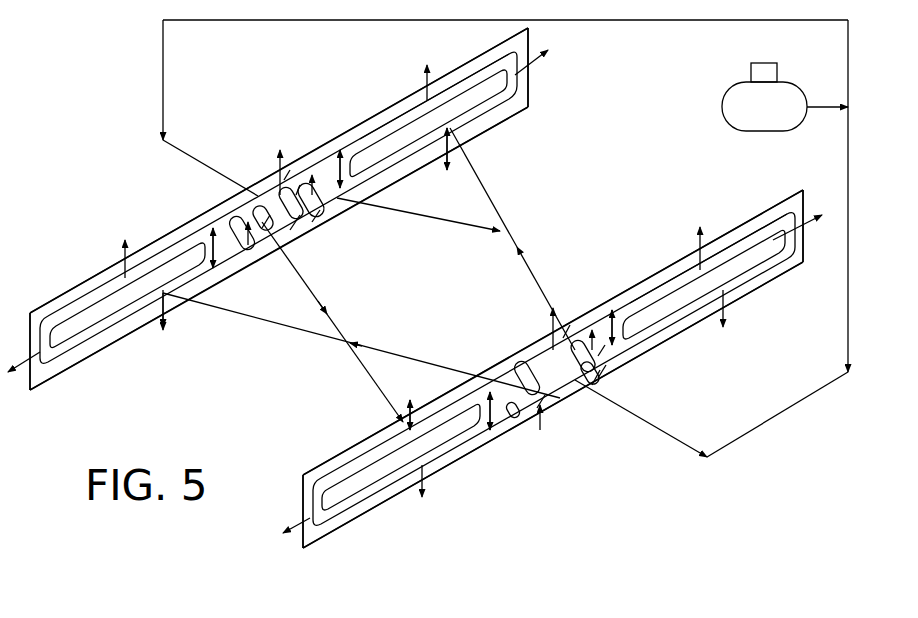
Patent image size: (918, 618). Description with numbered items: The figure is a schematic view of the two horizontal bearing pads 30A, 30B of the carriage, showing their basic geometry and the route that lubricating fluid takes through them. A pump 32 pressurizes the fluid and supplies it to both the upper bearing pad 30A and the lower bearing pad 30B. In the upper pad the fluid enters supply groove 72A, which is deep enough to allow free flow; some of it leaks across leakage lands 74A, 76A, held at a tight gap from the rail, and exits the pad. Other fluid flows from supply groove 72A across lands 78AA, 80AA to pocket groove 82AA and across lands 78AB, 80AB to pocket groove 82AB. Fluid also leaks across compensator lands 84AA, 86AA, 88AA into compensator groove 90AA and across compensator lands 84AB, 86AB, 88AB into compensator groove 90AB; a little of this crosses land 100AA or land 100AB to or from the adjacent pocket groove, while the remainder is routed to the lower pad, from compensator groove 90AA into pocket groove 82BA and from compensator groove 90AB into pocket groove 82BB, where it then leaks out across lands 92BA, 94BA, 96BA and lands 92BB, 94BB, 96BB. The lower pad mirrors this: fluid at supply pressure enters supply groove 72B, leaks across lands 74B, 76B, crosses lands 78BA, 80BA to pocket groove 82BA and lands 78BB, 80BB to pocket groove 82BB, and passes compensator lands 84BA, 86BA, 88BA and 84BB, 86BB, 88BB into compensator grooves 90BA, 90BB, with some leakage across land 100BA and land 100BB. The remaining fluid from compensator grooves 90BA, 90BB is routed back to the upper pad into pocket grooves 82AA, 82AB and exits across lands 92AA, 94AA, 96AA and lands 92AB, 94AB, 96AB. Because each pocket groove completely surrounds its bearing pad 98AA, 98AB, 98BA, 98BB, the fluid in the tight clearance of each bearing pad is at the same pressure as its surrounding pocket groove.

The horizontal bearing pad 30A is at (226, 380).
The horizontal bearing pad 30B is at (630, 508).
The pump 32 is at (740, 95).
The supply groove 72A is at (313, 232).
The leakage land 74A is at (268, 180).
The leakage land 76A is at (248, 250).
The supply groove 72B is at (600, 380).
The land 74B is at (567, 360).
The land 76B is at (527, 415).
The land 78AA is at (215, 238).
The land 78AB is at (345, 150).
The land 78BA is at (500, 383).
The land 78BB is at (610, 330).
The land 80AA is at (232, 285).
The land 80AB is at (337, 200).
The land 80BA is at (493, 427).
The land 80BB is at (610, 357).
The pocket groove 82AA is at (80, 345).
The pocket groove 82AB is at (510, 98).
The pocket groove 82BA is at (347, 503).
The pocket groove 82BB is at (775, 258).
The compensator land 84AA is at (240, 205).
The compensator land 84AB is at (298, 185).
The compensator land 84BA is at (517, 377).
The compensator land 84BB is at (600, 345).
The compensator land 86AA is at (280, 247).
The compensator land 86AB is at (287, 167).
The compensator land 86BA is at (590, 395).
The compensator land 86BB is at (565, 330).
The compensator land 88AA is at (260, 225).
The compensator land 88AB is at (317, 217).
The compensator land 88BA is at (530, 400).
The compensator land 88BB is at (600, 377).
The compensator groove 90AA is at (245, 262).
The compensator groove 90AB is at (312, 180).
The compensator groove 90BA is at (523, 423).
The compensator groove 90BB is at (592, 330).
The land 92AA is at (135, 262).
The land 92AB is at (440, 80).
The land 92BA is at (377, 443).
The land 92BB is at (713, 243).
The land 94AA is at (43, 357).
The land 94AB is at (530, 70).
The land 94BA is at (310, 513).
The land 94BB is at (810, 238).
The land 96AA is at (127, 325).
The land 96AB is at (480, 127).
The land 96BA is at (437, 470).
The land 96BB is at (753, 280).
The bearing pad 98AA is at (93, 320).
The bearing pad 98AB is at (452, 110).
The bearing pad 98BA is at (367, 480).
The bearing pad 98BB is at (717, 273).
The land 100AA is at (230, 220).
The land 100AB is at (348, 168).
The land 100BA is at (520, 372).
The land 100BB is at (640, 338).